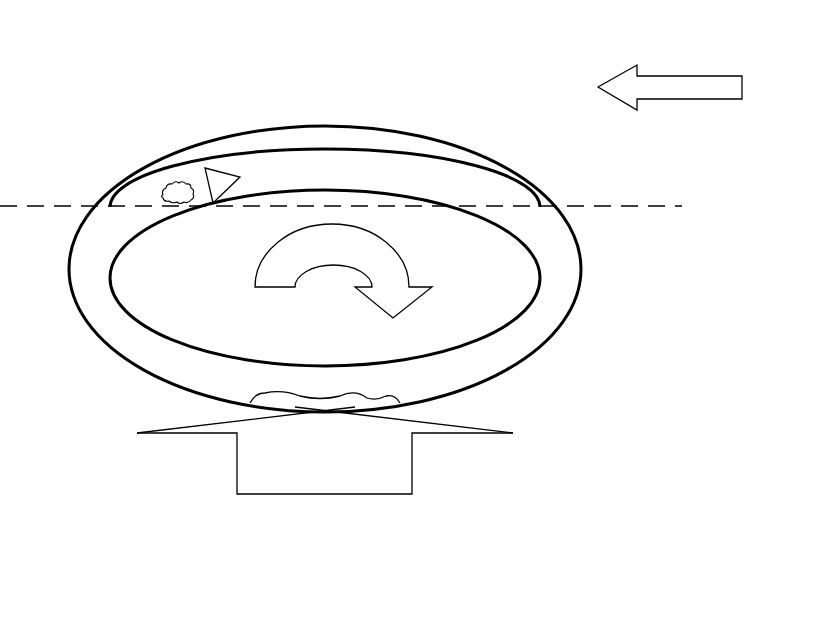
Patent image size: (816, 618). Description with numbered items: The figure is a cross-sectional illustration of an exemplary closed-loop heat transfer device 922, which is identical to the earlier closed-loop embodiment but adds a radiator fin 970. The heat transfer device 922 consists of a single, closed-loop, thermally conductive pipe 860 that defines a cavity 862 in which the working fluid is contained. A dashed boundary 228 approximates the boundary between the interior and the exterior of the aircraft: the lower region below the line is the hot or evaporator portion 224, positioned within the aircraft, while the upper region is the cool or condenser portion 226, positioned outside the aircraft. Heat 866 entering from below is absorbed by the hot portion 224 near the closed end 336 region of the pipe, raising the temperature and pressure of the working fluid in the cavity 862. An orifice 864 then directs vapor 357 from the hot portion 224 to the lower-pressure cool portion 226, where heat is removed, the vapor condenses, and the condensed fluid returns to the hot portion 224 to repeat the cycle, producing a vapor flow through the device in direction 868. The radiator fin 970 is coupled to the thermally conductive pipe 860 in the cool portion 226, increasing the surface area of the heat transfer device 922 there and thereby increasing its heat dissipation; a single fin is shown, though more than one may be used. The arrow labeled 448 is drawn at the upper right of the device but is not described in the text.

The heat transfer device 922 is at (144, 127).
The hot portion 224 is at (504, 396).
The cool portion 226 is at (471, 134).
The boundary 228 is at (605, 205).
The thermally conductive pipe 860 is at (113, 353).
The cavity 862 is at (184, 368).
The radiator fin 970 is at (373, 138).
The vapor 357 is at (165, 189).
The orifice 864 is at (221, 181).
The direction 868 is at (322, 265).
The closed end 336 is at (272, 394).
The heat 866 is at (262, 456).
The direction of translation 448 is at (688, 100).